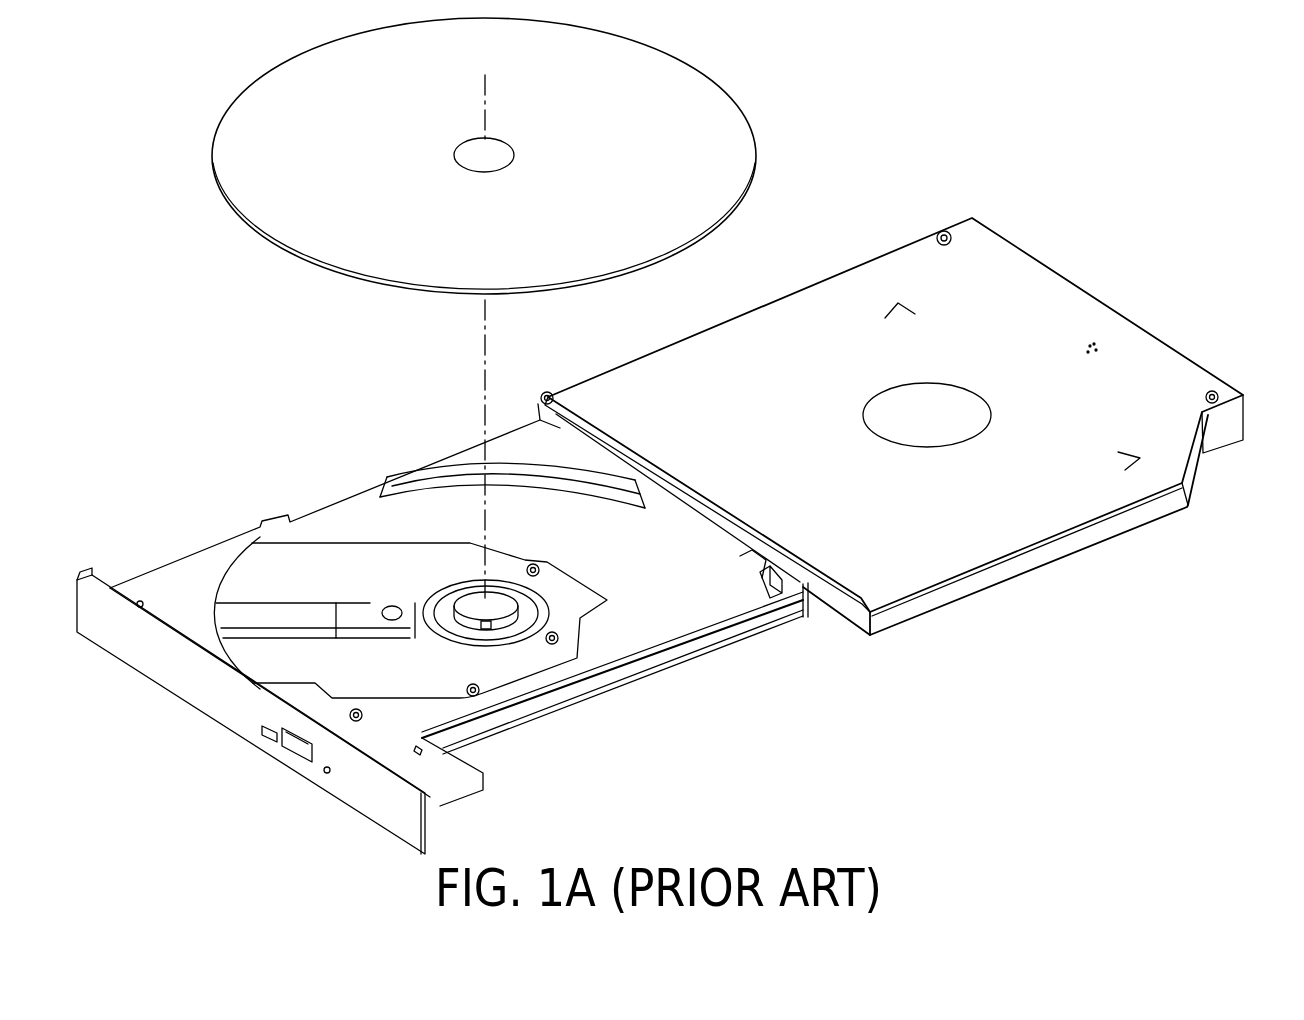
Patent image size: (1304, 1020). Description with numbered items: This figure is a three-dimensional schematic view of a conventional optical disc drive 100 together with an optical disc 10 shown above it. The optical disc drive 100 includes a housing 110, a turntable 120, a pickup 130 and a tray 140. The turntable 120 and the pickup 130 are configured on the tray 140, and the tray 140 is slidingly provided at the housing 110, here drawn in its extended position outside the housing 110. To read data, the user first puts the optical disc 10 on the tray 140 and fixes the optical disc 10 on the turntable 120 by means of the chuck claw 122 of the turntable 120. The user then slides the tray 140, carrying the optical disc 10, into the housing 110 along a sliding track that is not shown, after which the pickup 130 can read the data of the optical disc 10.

The optical disc 10 is at (748, 144).
The optical disc drive 100 is at (718, 668).
The housing 110 is at (970, 552).
The turntable 120 is at (500, 604).
The chuck claw 122 is at (486, 629).
The pickup 130 is at (392, 606).
The tray 140 is at (173, 563).